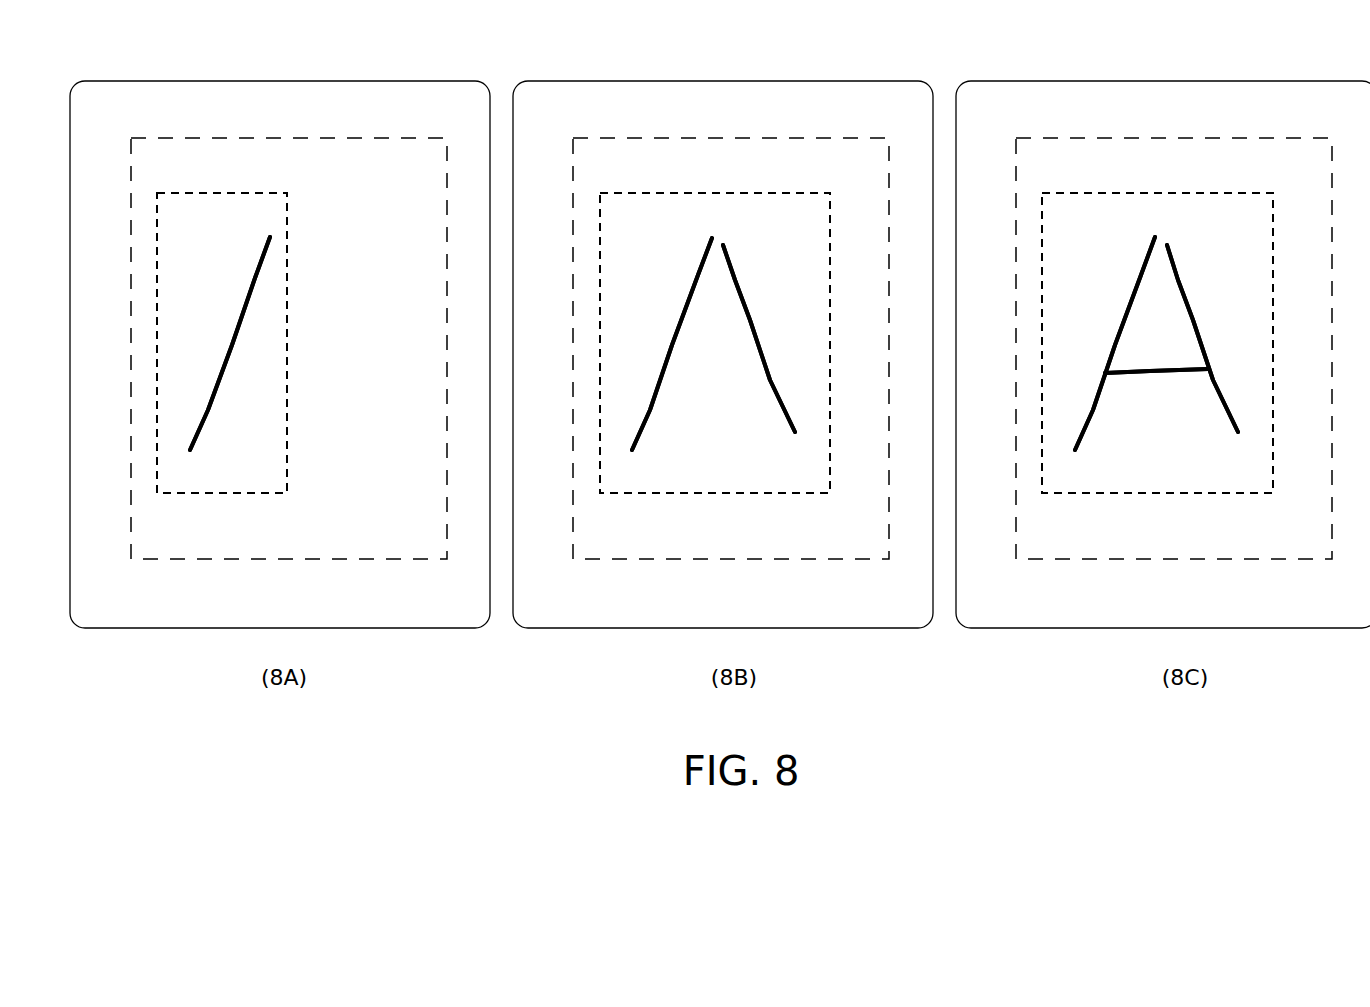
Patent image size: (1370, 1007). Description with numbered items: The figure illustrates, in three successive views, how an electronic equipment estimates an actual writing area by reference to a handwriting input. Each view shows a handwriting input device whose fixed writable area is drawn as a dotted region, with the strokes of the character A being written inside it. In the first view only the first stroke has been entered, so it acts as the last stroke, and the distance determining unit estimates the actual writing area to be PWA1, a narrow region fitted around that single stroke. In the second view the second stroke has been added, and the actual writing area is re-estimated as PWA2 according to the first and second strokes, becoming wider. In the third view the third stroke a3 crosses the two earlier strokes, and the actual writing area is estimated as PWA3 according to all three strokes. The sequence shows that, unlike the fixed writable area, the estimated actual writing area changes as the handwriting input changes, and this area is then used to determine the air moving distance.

The actual writing area PWA1 is at (213, 493).
The actual writing area PWA2 is at (707, 493).
The actual writing area PWA3 is at (1148, 493).
The third stroke a3 is at (1125, 375).